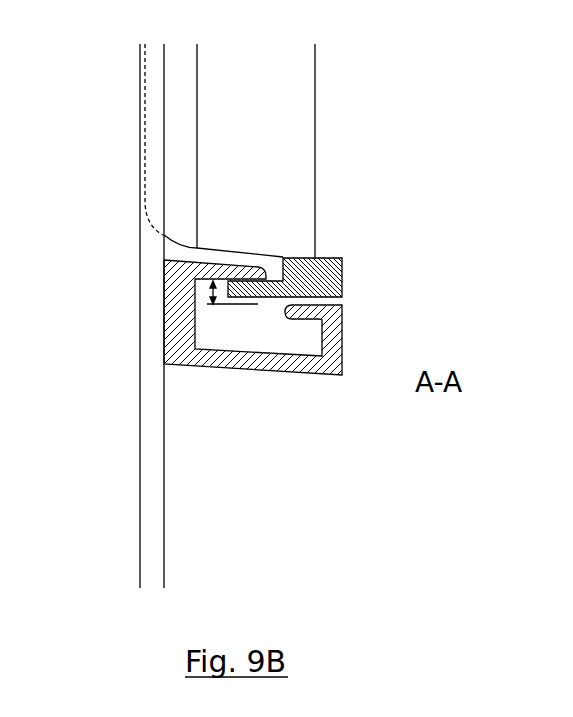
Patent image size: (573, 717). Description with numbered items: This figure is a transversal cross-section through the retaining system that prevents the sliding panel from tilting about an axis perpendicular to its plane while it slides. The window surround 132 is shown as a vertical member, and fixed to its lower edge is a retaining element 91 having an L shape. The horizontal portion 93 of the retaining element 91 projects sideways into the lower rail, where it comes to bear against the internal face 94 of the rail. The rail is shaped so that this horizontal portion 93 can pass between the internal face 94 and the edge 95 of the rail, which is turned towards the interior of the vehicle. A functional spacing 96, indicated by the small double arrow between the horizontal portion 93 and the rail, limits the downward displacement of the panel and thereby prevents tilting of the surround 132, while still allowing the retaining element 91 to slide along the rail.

The surround 132 is at (302, 133).
The internal face 94 is at (223, 272).
The edge 95 is at (342, 319).
The retaining element 91 is at (343, 276).
The horizontal portion 93 is at (250, 297).
The functional spacing 96 is at (208, 291).